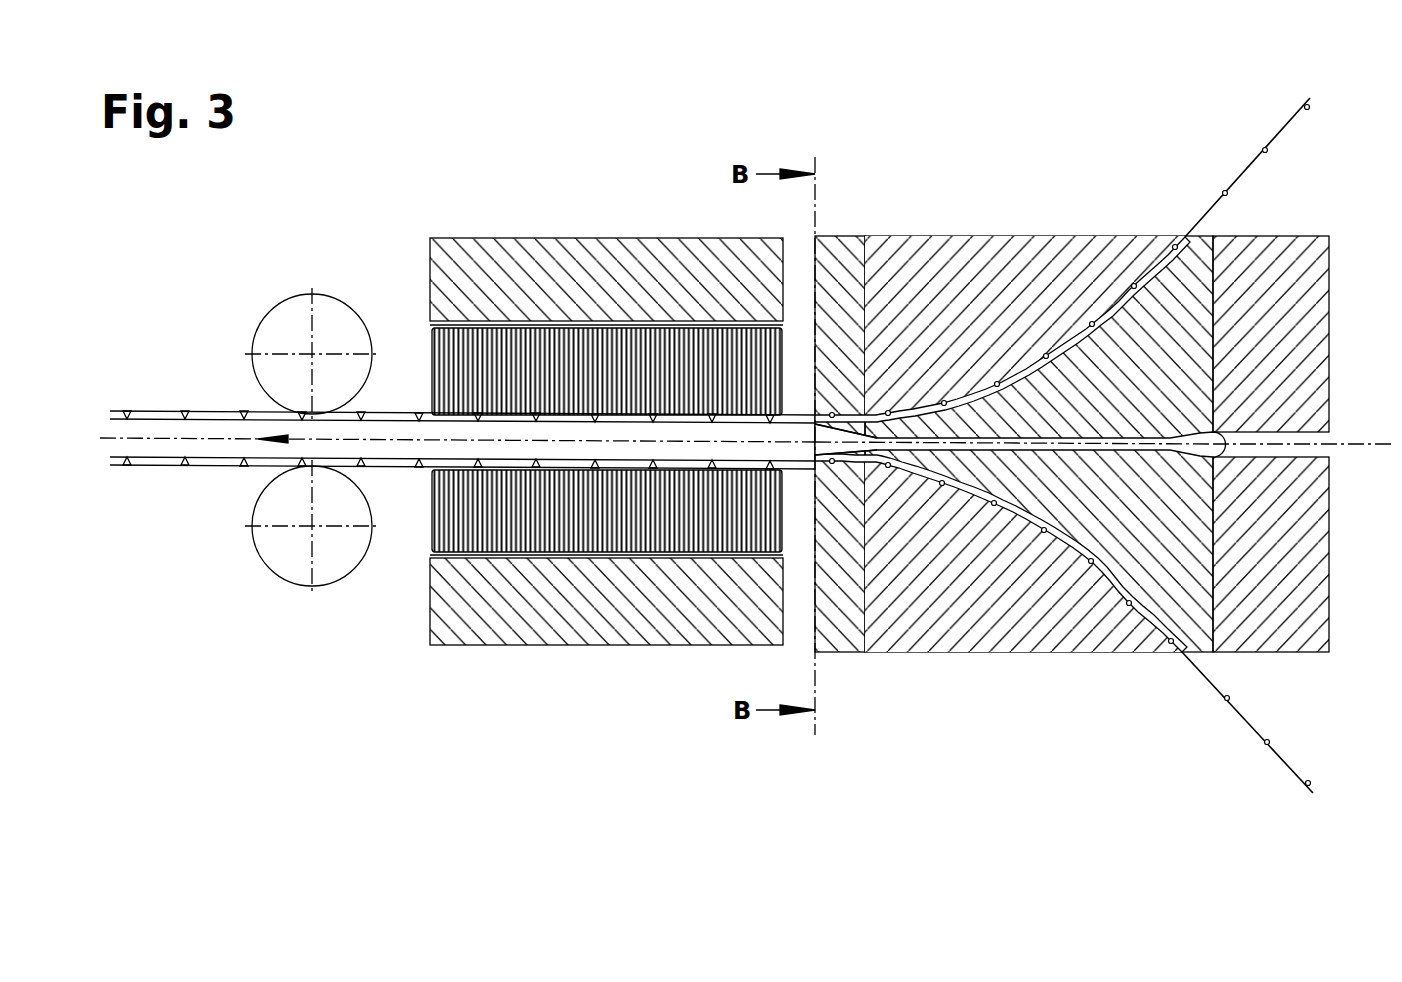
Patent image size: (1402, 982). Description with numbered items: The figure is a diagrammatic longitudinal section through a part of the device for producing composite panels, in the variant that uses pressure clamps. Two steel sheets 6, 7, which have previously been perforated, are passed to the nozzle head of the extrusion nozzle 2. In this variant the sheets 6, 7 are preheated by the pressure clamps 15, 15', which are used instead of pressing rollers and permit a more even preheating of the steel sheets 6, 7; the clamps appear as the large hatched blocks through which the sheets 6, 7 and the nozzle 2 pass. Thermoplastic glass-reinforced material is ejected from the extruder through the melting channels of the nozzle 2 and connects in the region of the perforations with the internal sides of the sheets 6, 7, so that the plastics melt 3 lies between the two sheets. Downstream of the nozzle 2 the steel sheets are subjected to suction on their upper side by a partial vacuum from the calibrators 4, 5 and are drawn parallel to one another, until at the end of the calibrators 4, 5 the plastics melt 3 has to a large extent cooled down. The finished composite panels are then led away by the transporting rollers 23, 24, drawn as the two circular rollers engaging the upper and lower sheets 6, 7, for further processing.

The extrusion nozzle 2 is at (837, 447).
The plastics melt 3 is at (1330, 438).
The calibrator 4 is at (492, 258).
The calibrator 5 is at (503, 621).
The sheet 6 is at (1247, 168).
The sheet 7 is at (1243, 715).
The pressure clamp 15 is at (1072, 311).
The pressure clamp 15' is at (1072, 576).
The transporting roller 23 is at (333, 300).
The transporting roller 24 is at (337, 570).